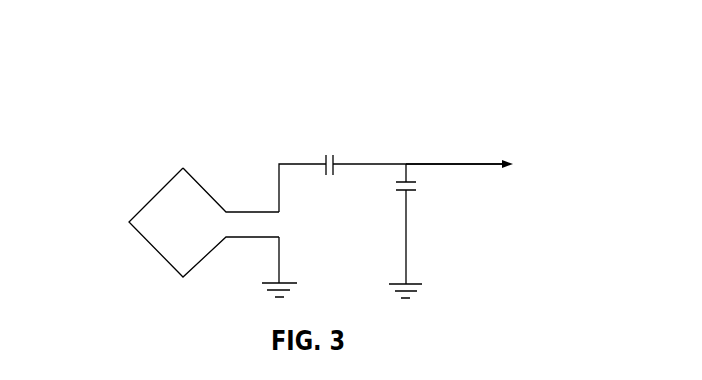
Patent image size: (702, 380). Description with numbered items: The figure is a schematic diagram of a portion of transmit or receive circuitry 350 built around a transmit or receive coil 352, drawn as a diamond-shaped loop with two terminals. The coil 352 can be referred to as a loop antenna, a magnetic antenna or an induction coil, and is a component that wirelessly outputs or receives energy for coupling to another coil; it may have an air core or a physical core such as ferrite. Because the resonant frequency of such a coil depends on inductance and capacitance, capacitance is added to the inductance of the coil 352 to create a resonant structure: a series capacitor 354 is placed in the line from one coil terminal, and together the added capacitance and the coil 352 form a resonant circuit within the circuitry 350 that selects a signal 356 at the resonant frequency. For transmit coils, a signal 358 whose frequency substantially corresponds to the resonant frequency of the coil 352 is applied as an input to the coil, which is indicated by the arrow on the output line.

The transmit or receive circuitry 350 is at (223, 118).
The coil 352 is at (158, 193).
The capacitor 354 is at (335, 161).
The signal 356 is at (410, 193).
The signal 358 is at (442, 163).